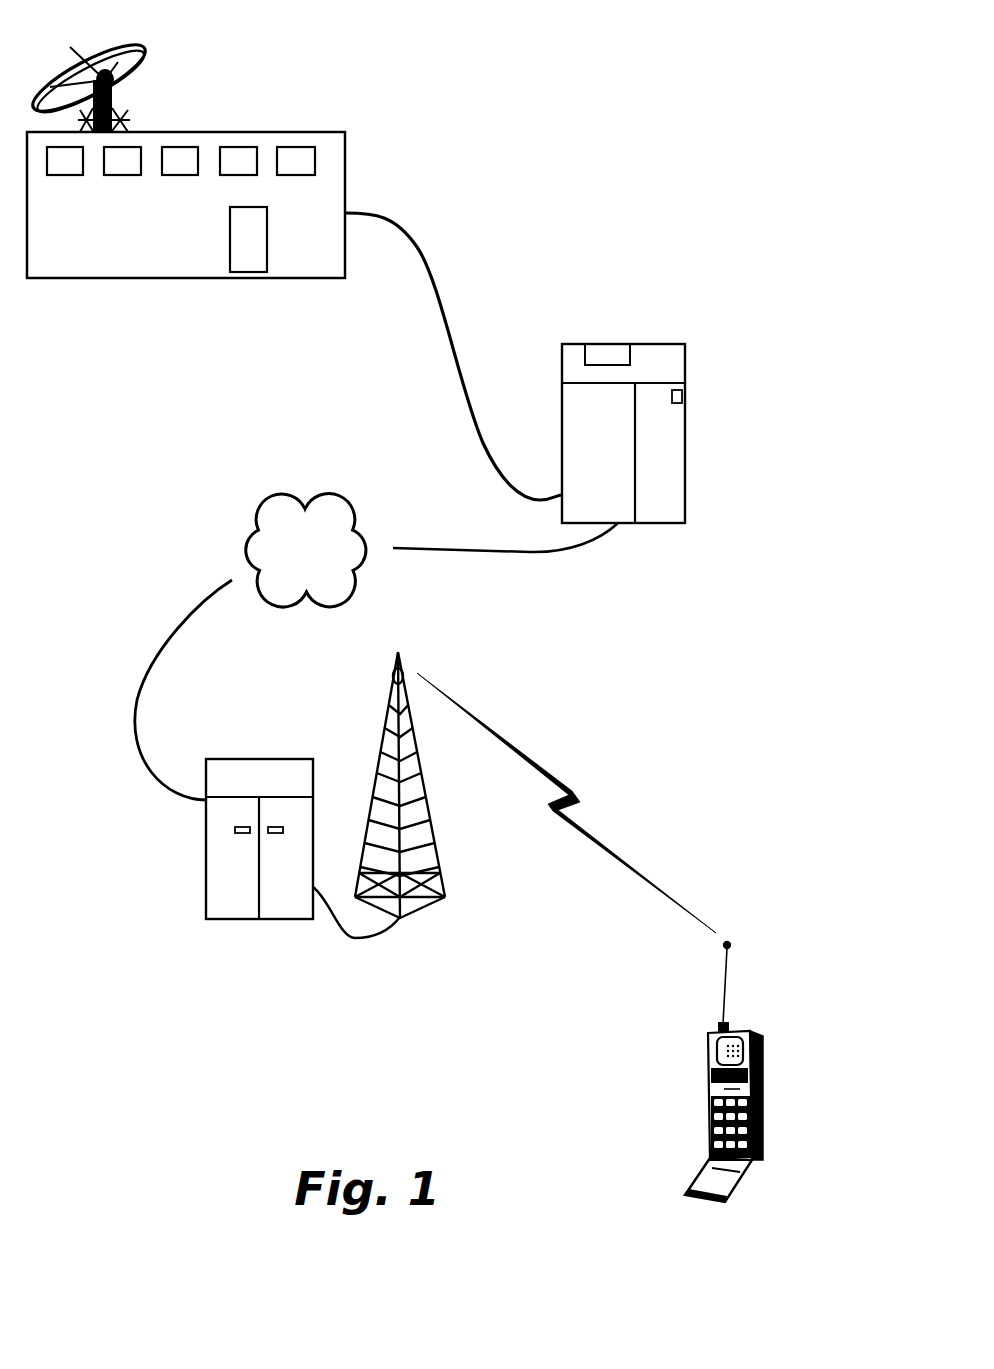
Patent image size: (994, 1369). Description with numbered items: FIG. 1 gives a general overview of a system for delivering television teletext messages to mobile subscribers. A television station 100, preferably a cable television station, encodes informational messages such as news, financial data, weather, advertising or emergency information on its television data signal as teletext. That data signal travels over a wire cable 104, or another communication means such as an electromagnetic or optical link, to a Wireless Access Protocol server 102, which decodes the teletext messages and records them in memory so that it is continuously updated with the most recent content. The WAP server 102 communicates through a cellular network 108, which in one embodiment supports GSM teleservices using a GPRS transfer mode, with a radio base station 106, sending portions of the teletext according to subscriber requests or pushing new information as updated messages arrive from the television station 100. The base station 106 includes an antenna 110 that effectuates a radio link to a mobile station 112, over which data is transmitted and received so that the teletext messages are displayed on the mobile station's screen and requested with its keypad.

The television station 100 is at (170, 279).
The Wireless Access Protocol (WAP) server 102 is at (652, 523).
The wire cable 104 is at (425, 253).
The radio base station 106 is at (232, 920).
The cellular network 108 is at (220, 530).
The antenna 110 is at (440, 902).
The mobile station 112 is at (710, 1110).